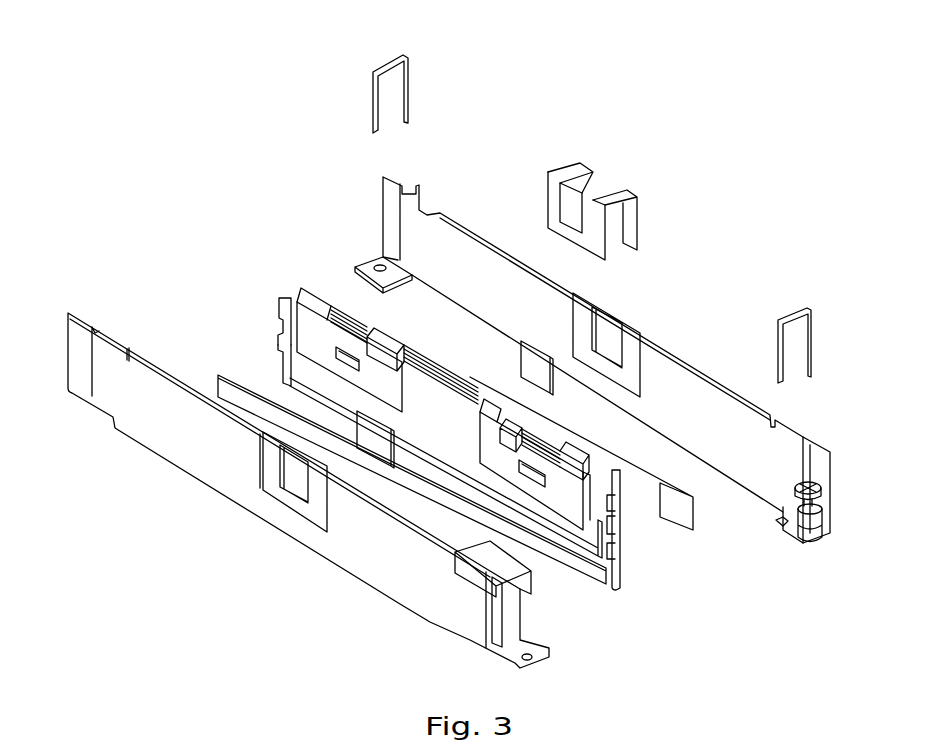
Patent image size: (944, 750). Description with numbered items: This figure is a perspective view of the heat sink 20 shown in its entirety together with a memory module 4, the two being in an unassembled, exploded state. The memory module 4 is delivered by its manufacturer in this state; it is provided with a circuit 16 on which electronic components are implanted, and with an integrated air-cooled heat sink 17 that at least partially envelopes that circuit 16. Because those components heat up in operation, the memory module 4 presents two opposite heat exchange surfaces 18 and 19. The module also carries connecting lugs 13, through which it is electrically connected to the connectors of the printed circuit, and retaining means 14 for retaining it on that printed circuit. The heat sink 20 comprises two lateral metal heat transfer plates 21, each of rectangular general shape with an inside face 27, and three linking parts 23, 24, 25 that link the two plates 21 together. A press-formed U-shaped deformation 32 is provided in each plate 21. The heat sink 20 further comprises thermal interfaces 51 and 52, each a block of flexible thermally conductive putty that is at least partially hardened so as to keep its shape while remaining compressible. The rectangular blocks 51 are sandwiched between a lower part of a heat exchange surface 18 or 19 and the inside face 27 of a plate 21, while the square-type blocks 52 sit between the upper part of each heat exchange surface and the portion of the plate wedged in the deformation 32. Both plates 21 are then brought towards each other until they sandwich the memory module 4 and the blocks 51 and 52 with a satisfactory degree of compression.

The heat sink 20 is at (143, 251).
The memory module 4 is at (284, 293).
The connecting lugs 13 is at (290, 383).
The retaining means 14 is at (615, 508).
The circuit 16 is at (614, 585).
The integrated air-cooled heat sink 17 is at (290, 340).
The heat exchange surface 18 is at (423, 436).
The heat exchange surface 19 is at (445, 370).
The heat transfer plates 21 is at (188, 460).
The linking part 23 is at (390, 57).
The linking part 24 is at (793, 312).
The linking part 25 is at (570, 168).
The inside face 27 is at (176, 377).
The deformation 32 is at (273, 498).
The thermal interfaces (blocks of thermally conductive putty) 51 is at (528, 583).
The thermal interfaces (blocks of thermally conductive putty) 52 is at (383, 454).